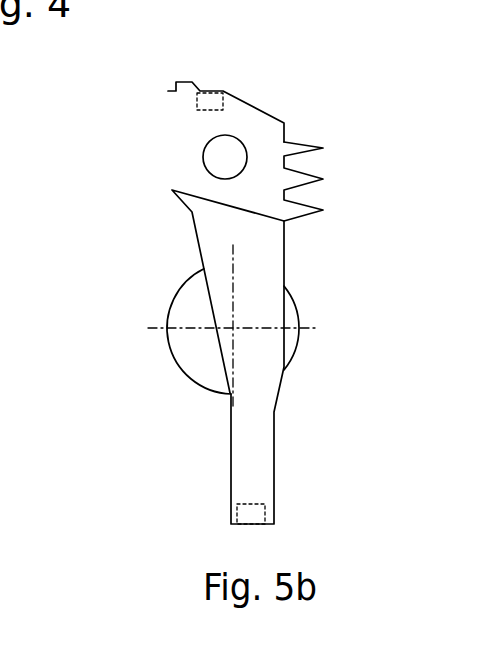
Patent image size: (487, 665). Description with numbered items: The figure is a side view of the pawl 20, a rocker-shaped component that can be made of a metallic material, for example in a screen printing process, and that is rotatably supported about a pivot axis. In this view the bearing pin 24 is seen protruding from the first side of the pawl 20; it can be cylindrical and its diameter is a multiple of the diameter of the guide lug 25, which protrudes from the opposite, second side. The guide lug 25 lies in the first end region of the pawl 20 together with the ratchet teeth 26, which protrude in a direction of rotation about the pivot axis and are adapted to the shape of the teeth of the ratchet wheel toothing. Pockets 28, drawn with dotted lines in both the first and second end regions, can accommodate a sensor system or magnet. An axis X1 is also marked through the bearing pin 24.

The pawl 20 is at (136, 197).
The bearing pin 24 is at (192, 353).
The guide lug 25 is at (220, 155).
The ratchet teeth 26 is at (295, 142).
The pockets 28 is at (210, 100).
The center axis X1 is at (233, 328).